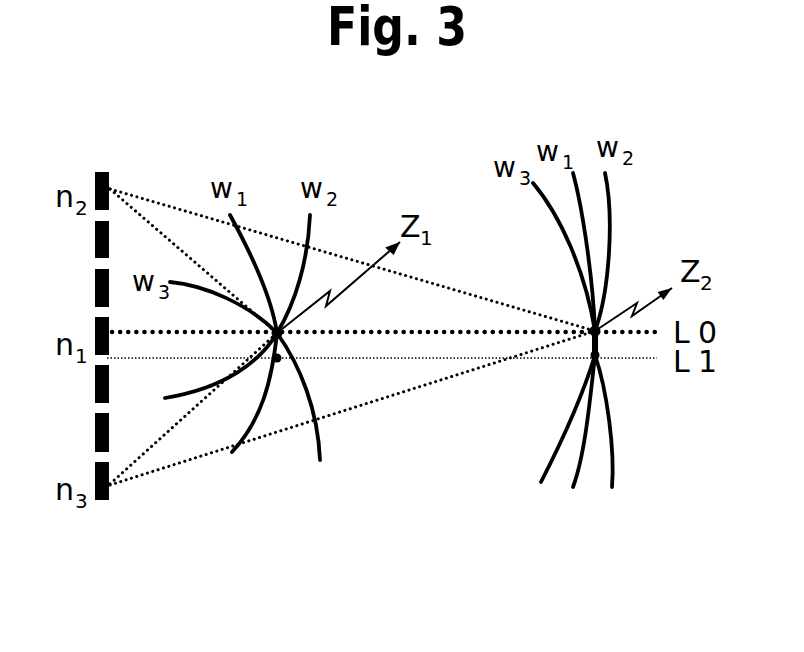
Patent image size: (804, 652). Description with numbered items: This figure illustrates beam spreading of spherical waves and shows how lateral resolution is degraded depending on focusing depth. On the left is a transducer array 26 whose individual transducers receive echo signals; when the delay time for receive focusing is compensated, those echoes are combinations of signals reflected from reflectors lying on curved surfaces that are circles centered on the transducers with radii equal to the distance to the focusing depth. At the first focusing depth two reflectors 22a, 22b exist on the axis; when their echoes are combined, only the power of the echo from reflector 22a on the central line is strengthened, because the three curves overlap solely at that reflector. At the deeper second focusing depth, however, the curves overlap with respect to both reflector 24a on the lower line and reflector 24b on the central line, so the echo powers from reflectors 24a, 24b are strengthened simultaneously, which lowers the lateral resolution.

The object / slit array 26 is at (100, 172).
The reflector 22a is at (285, 329).
The reflector 22b is at (279, 361).
The reflector 24a is at (588, 360).
The reflector 24b is at (593, 326).